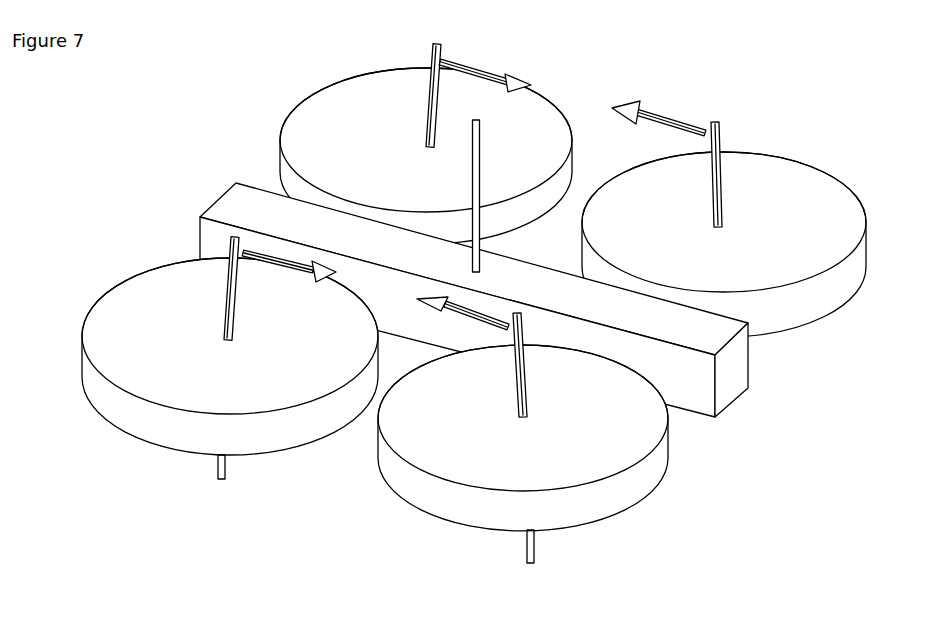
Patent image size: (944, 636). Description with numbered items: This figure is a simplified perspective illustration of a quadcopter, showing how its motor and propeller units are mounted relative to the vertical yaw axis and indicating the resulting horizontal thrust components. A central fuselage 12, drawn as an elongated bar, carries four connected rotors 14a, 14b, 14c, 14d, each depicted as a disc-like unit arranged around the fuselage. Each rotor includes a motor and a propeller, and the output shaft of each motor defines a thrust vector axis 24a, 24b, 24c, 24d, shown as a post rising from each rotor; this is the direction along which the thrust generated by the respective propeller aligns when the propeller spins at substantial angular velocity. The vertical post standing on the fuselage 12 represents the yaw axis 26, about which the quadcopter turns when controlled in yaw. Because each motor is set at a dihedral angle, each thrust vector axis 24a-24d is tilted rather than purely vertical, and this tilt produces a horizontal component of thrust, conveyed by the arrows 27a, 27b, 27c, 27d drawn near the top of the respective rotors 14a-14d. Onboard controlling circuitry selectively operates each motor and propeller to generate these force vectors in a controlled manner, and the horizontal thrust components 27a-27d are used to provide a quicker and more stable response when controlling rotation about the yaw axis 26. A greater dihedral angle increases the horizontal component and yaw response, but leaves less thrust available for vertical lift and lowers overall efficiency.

The fuselage 12 is at (698, 397).
The rotor 14a is at (133, 375).
The rotor 14b is at (327, 105).
The rotor 14c is at (582, 462).
The rotor 14d is at (780, 167).
The thrust vector axis 24a is at (233, 317).
The thrust vector axis 24b is at (425, 100).
The thrust vector axis 24c is at (520, 373).
The thrust vector axis 24d is at (713, 175).
The yaw axis 26 is at (473, 178).
The horizontal thrust component arrow 27a is at (323, 273).
The horizontal thrust component arrow 27b is at (530, 82).
The horizontal thrust component arrow 27c is at (430, 303).
The horizontal thrust component arrow 27d is at (640, 108).